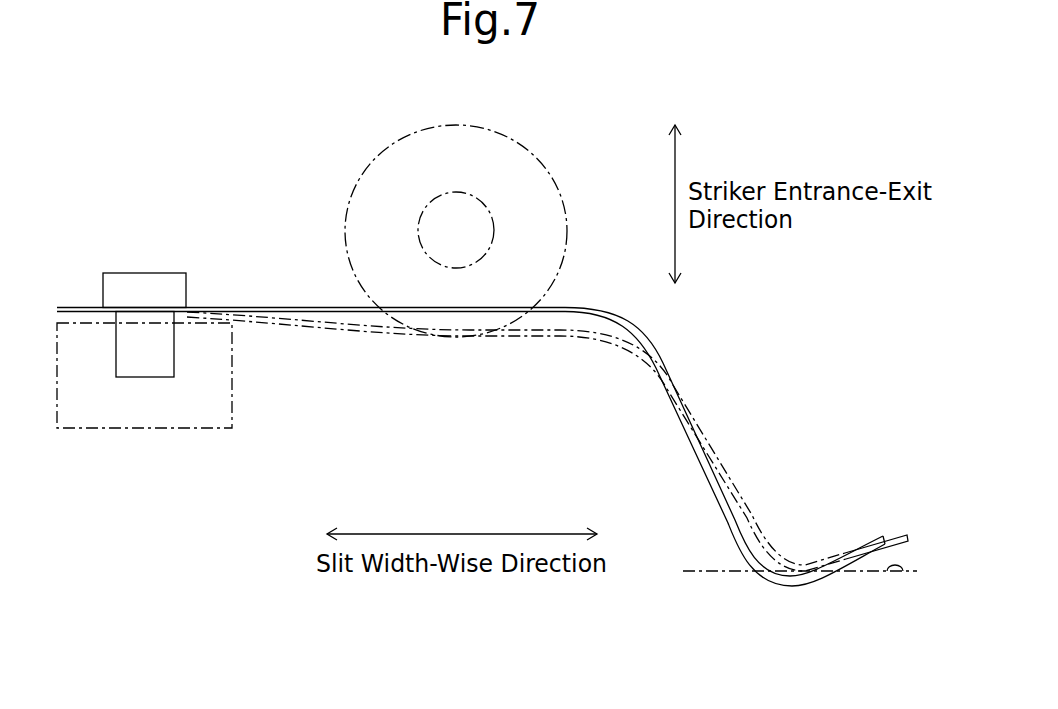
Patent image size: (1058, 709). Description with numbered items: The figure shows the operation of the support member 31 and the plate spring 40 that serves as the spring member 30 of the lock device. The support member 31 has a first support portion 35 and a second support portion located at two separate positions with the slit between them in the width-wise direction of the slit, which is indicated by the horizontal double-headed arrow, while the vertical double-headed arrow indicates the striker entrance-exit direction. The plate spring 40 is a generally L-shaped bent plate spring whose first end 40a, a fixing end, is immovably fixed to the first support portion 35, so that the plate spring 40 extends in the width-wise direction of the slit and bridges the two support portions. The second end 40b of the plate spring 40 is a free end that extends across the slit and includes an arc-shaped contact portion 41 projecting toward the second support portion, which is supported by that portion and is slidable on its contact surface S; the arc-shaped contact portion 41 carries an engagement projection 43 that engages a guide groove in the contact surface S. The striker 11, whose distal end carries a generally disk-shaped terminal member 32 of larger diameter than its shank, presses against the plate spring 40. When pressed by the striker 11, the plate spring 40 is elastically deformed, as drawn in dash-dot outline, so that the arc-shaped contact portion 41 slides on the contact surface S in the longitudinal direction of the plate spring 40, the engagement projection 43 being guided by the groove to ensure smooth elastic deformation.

The first end 40a is at (75, 307).
The striker 11 is at (388, 231).
The terminal member 32 is at (348, 208).
The plate spring 40 is at (482, 447).
The spring member 30 is at (622, 318).
The support member 31 is at (487, 447).
The first support portion 35 is at (144, 375).
The arc-shaped contact portion 41 is at (783, 562).
The engagement projection 43 is at (790, 587).
The second end 40b is at (883, 537).
The contact surface S is at (893, 576).